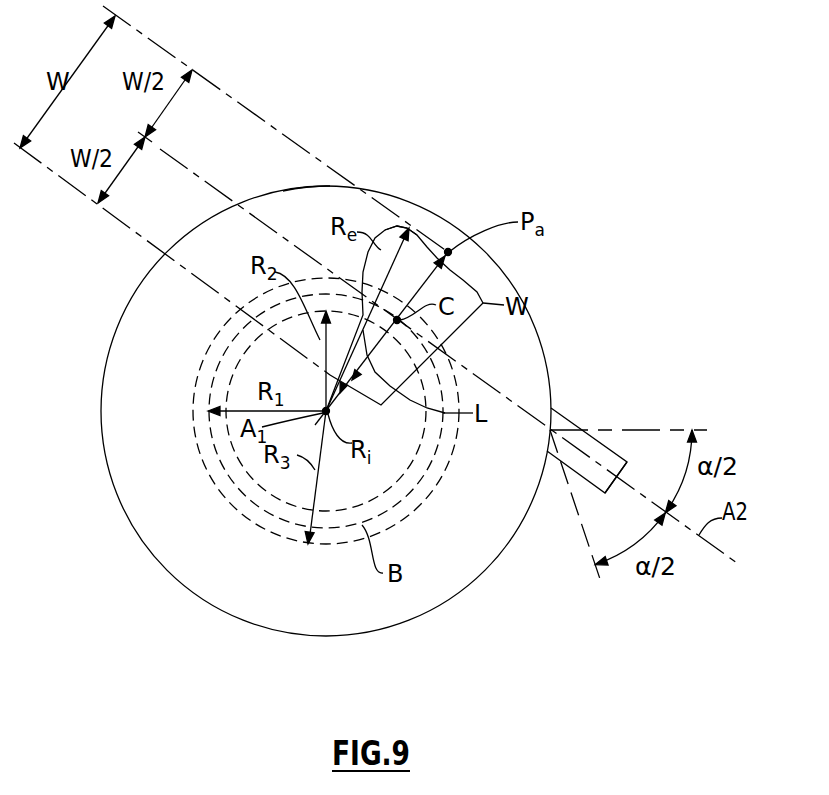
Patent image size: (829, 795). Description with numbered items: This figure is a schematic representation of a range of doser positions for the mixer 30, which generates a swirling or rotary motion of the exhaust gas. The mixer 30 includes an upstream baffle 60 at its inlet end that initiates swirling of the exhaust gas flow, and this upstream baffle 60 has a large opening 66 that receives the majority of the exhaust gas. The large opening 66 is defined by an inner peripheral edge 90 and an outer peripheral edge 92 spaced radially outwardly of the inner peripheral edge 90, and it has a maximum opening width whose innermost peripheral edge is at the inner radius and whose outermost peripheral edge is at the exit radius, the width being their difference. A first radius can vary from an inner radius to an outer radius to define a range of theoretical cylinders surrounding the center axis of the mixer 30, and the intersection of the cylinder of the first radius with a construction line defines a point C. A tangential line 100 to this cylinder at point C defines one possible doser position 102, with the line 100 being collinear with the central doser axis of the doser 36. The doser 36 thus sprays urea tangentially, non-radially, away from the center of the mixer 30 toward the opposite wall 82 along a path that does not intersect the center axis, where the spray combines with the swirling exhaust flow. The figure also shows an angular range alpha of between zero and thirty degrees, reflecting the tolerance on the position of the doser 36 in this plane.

The mixer 30 is at (353, 70).
The doser 36 is at (566, 401).
The upstream baffle 60 is at (113, 340).
The large opening 66 is at (418, 242).
The opposite wall 82 is at (303, 191).
The inner peripheral edge 90 is at (363, 392).
The outer peripheral edge 92 is at (471, 286).
The tangential line 100 is at (185, 164).
The doser position 102 is at (628, 451).